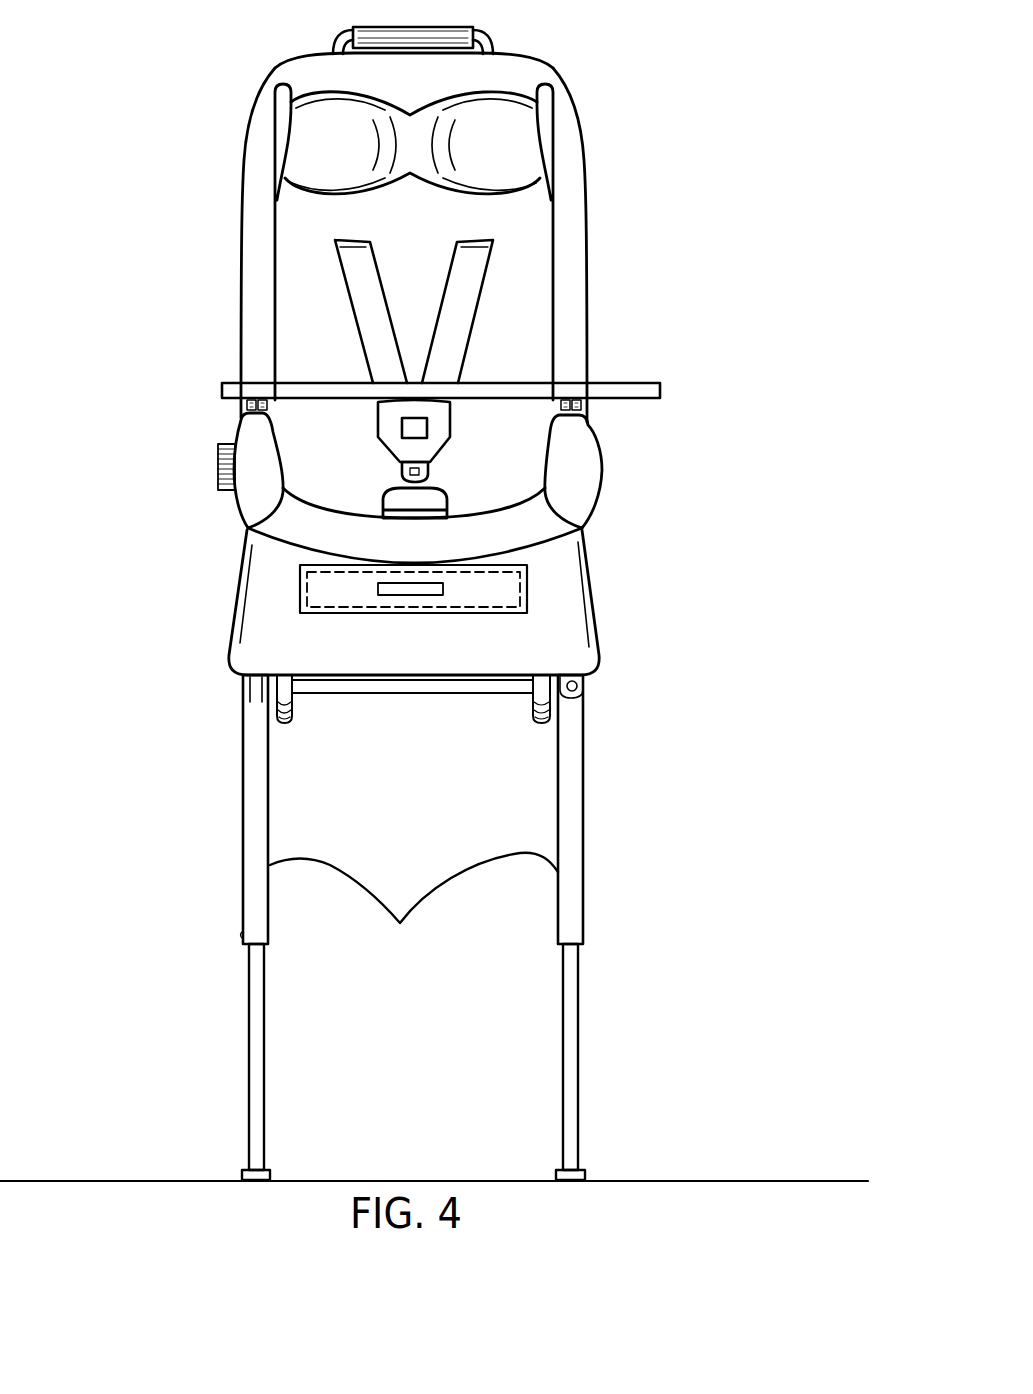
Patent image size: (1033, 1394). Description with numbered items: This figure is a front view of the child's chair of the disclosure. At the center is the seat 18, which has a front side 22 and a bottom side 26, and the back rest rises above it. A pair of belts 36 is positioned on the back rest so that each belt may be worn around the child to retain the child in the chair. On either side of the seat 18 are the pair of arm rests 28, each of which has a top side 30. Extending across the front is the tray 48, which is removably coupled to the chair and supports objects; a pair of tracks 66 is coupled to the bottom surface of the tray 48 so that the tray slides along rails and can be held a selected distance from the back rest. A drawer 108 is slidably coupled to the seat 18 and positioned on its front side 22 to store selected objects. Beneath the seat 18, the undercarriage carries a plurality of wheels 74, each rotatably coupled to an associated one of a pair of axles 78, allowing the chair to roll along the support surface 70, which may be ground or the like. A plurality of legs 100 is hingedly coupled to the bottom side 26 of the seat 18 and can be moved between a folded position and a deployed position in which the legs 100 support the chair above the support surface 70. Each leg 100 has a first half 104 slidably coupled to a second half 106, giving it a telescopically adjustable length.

The seat 18 is at (583, 528).
The front side 22 is at (251, 638).
The bottom side 26 is at (437, 677).
The arm rests 28 is at (602, 463).
The top side 30 is at (254, 381).
The belts 36 is at (467, 277).
The tray 48 is at (660, 387).
The tracks 66 is at (243, 403).
The support surface 70 is at (710, 1181).
The wheels 74 is at (288, 723).
The axles 78 is at (218, 463).
The legs 100 is at (414, 910).
The first half 104 is at (581, 892).
The second half 106 is at (578, 1015).
The drawer 108 is at (527, 592).